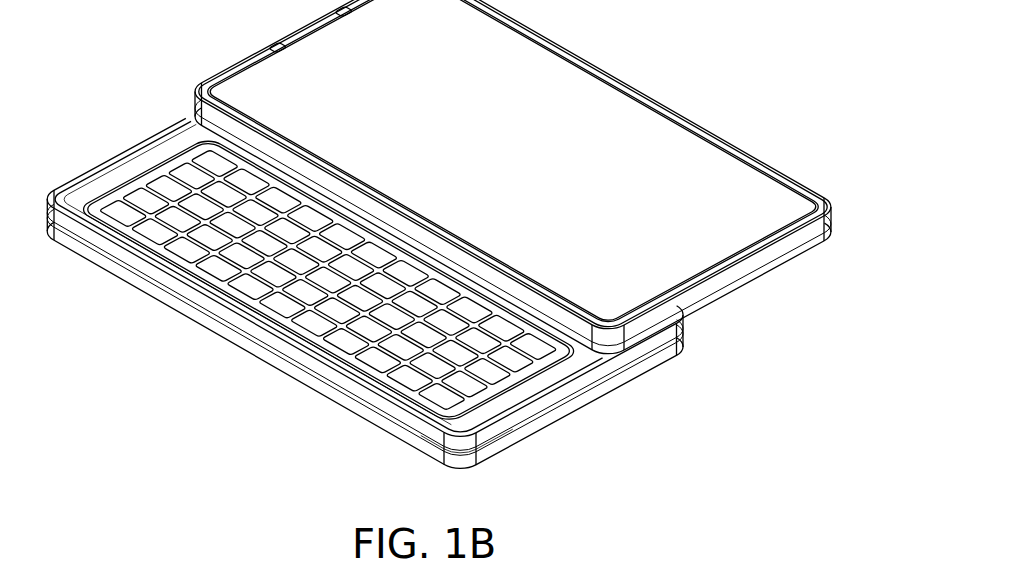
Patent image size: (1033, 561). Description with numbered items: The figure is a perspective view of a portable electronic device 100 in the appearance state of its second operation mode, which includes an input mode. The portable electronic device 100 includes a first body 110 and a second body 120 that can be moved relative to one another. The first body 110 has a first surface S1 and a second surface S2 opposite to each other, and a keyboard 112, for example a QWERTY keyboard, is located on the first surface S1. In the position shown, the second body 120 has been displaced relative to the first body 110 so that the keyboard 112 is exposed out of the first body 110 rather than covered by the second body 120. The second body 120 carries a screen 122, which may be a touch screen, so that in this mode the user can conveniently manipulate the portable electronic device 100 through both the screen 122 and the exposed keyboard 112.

The portable electronic device 100 is at (439, 253).
The first body 110 is at (158, 290).
The keyboard 112 is at (132, 195).
The second body 120 is at (614, 78).
The screen 122 is at (723, 187).
The first surface S1 is at (156, 150).
The second surface S2 is at (522, 443).